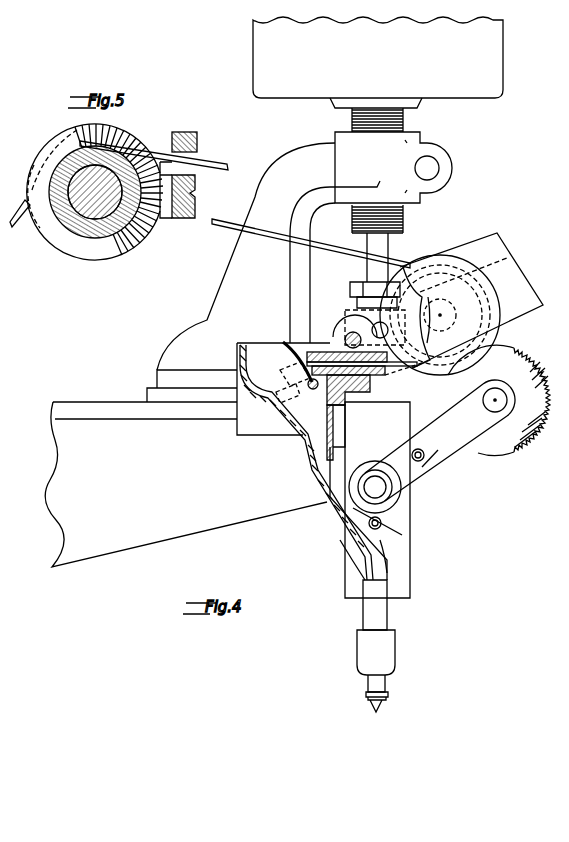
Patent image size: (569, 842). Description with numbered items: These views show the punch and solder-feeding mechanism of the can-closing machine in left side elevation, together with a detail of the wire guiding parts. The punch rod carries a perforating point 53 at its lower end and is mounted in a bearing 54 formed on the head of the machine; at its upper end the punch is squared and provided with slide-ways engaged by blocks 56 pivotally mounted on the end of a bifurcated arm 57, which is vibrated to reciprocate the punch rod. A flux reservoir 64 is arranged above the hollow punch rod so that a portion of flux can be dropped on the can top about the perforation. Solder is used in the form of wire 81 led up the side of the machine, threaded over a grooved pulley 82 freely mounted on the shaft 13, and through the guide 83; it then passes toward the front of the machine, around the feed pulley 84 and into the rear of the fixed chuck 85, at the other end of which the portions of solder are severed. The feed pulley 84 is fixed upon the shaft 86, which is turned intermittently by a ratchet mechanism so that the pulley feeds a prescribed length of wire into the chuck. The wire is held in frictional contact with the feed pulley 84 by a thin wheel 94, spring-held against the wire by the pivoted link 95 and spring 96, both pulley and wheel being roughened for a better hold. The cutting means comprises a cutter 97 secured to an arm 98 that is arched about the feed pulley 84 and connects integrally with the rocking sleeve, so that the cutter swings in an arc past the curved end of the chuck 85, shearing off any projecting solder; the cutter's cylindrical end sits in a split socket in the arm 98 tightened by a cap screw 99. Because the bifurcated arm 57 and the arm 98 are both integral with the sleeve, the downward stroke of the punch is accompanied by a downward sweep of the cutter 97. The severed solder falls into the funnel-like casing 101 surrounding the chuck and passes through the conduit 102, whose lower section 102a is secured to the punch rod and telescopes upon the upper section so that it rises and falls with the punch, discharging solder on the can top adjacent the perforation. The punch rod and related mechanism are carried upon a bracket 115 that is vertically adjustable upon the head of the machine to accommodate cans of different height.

In FIG. 5, the shaft 13 is at (97, 207).
In FIG. 4, the perforating point 53 is at (372, 703).
In FIG. 4, the bearing 54 is at (415, 552).
In FIG. 4, the blocks 56 is at (368, 305).
In FIG. 4, the bifurcated arm 57 is at (363, 326).
In FIG. 4, the flux reservoir 64 is at (378, 74).
In FIG. 5, the wire 81 is at (156, 150).
In FIG. 4, the wire 81 is at (266, 232).
In FIG. 5, the grooved pulley 82 is at (56, 141).
In FIG. 5, the guide 83 is at (193, 140).
In FIG. 4, the feed pulley 84 is at (438, 262).
In FIG. 4, the fixed chuck 85 is at (368, 375).
In FIG. 4, the shaft 86 is at (450, 316).
In FIG. 4, the thin wheel 94 is at (490, 447).
In FIG. 4, the pivoted link 95 is at (440, 440).
In FIG. 4, the spring 96 is at (410, 462).
In FIG. 4, the cutter 97 is at (287, 356).
In FIG. 4, the arm 98 is at (406, 369).
In FIG. 4, the cap screw 99 is at (284, 373).
In FIG. 4, the funnel-like casing 101 is at (284, 400).
In FIG. 4, the conduit 102 is at (330, 485).
In FIG. 4, the lower conduit section 102a is at (375, 615).
In FIG. 4, the bracket 115 is at (186, 484).